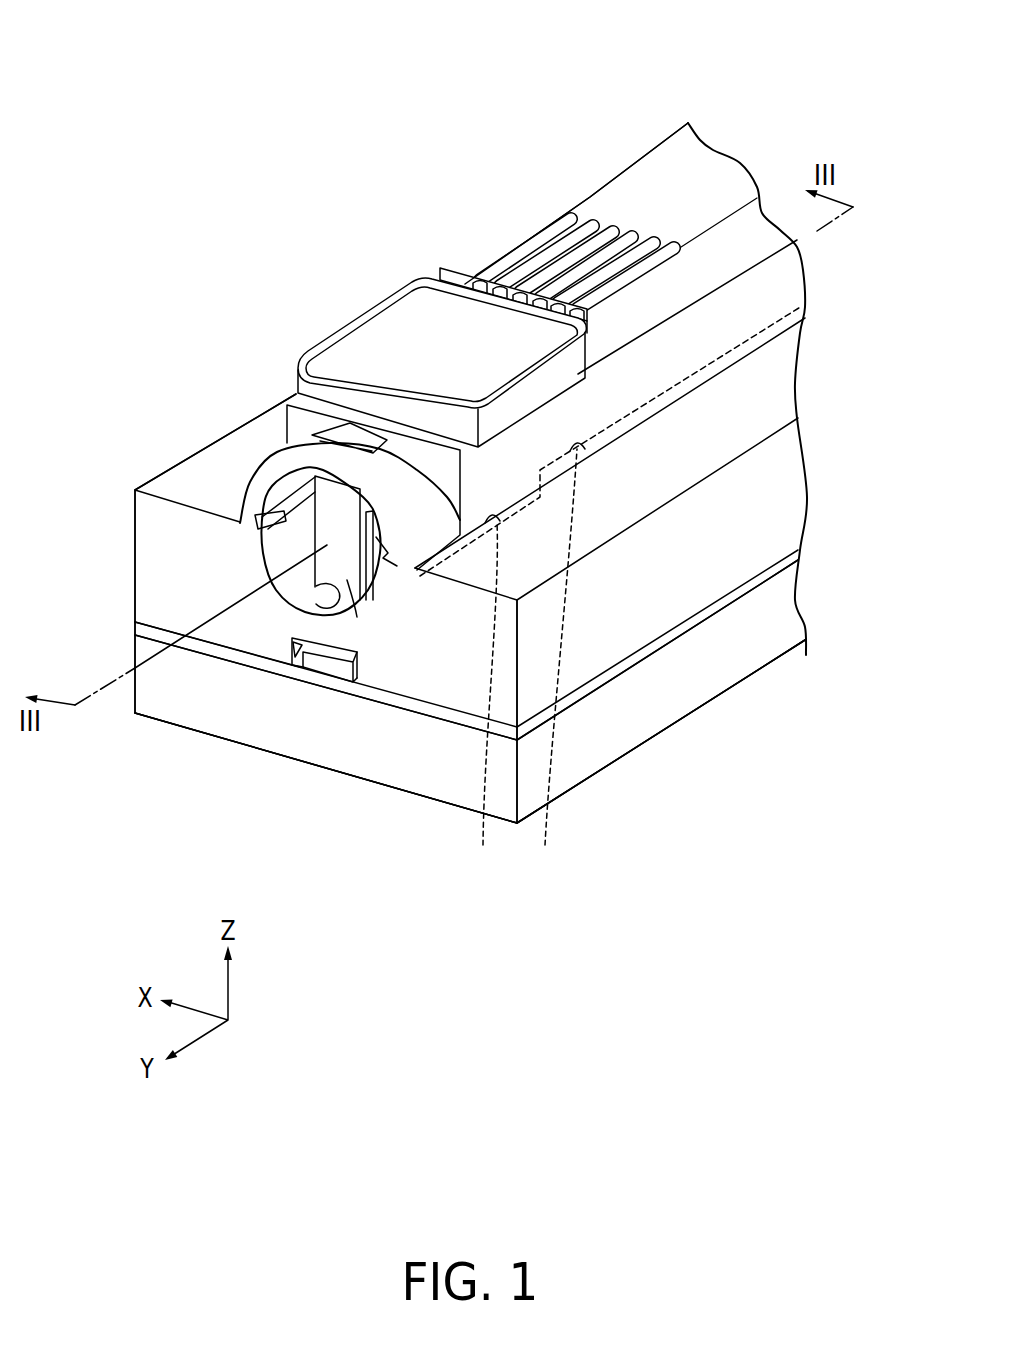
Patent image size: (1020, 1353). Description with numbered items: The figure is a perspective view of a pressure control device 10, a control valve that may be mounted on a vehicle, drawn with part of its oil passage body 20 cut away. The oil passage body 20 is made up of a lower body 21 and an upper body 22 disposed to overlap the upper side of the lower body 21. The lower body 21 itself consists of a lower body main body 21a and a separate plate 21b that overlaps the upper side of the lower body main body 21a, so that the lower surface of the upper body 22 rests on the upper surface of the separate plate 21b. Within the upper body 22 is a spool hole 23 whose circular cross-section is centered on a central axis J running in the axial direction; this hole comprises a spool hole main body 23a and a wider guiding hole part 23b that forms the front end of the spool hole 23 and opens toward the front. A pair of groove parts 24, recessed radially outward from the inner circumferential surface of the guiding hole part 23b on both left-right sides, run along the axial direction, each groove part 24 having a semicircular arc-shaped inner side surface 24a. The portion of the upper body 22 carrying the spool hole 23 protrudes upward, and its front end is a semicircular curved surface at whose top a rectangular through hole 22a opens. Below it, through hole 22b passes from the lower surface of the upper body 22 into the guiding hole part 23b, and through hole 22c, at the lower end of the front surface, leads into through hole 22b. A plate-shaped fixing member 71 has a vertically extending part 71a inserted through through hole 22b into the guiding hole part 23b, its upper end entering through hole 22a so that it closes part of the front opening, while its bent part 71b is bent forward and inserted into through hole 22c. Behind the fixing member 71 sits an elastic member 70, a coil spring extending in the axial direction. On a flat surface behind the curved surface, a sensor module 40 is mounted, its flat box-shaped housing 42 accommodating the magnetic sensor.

The pressure control device 10 is at (620, 102).
The oil passage body 20 is at (735, 760).
The lower body 21 is at (735, 650).
The lower body main body 21a is at (620, 730).
The separate plate 21b is at (733, 654).
The upper body 22 is at (752, 532).
The through hole 22a is at (290, 400).
The through hole 22b is at (327, 590).
The through hole 22c is at (297, 640).
The spool hole 23 is at (526, 680).
The spool hole main body 23a is at (554, 658).
The guiding hole part 23b is at (490, 694).
The groove part 24 is at (248, 538).
The inner side surface 24a is at (276, 513).
The sensor module 40 is at (421, 276).
The housing 42 is at (382, 343).
The elastic member 70 is at (374, 570).
The fixing member 71 is at (320, 746).
The extending part 71a is at (362, 612).
The bent part 71b is at (320, 667).
The central axis J is at (197, 640).